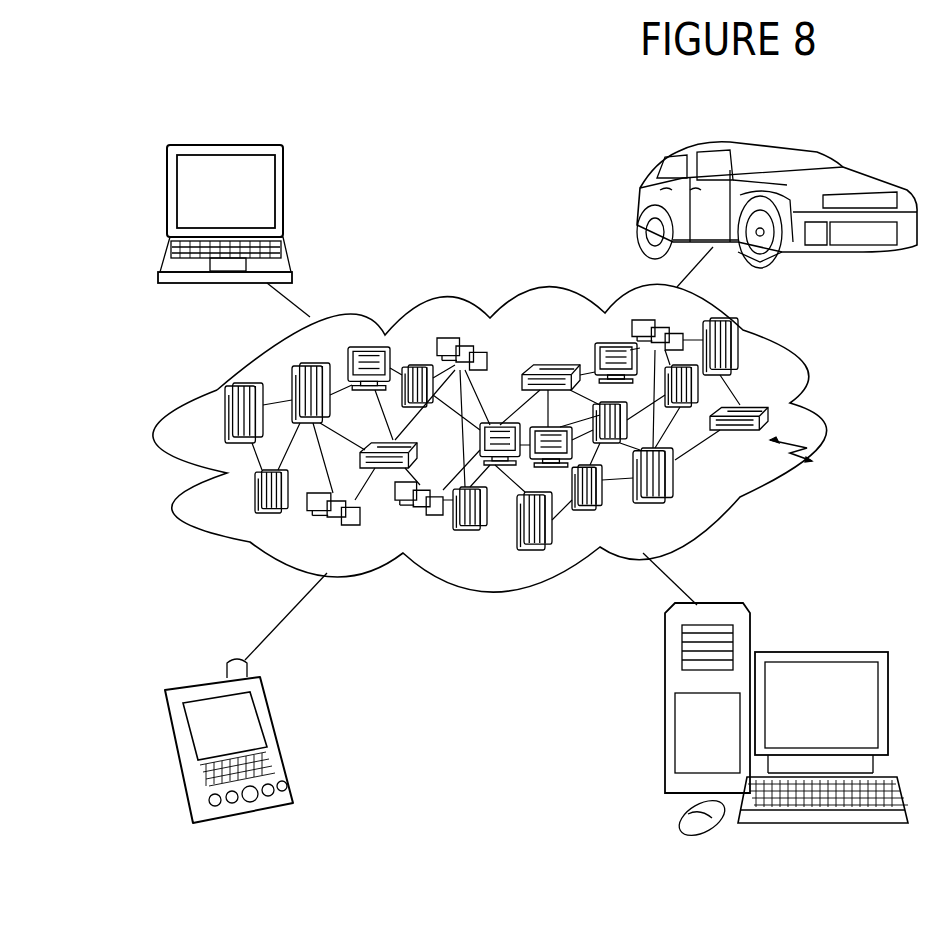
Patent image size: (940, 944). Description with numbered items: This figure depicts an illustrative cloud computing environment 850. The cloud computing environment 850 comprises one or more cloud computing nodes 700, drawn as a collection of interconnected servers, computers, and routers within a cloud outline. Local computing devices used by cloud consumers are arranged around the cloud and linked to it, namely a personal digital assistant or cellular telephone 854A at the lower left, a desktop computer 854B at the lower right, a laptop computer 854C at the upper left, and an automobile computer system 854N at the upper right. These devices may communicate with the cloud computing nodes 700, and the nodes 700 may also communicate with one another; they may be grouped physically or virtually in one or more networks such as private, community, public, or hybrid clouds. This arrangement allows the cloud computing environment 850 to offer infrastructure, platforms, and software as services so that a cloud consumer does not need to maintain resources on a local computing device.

The laptop computer 854C is at (284, 194).
The automobile computer system 854N is at (640, 207).
The cloud computing environment 850 is at (818, 413).
The cloud computing nodes 700 is at (810, 457).
The personal digital assistant (PDA) or cellular telephone 854A is at (277, 733).
The desktop computer 854B is at (820, 648).